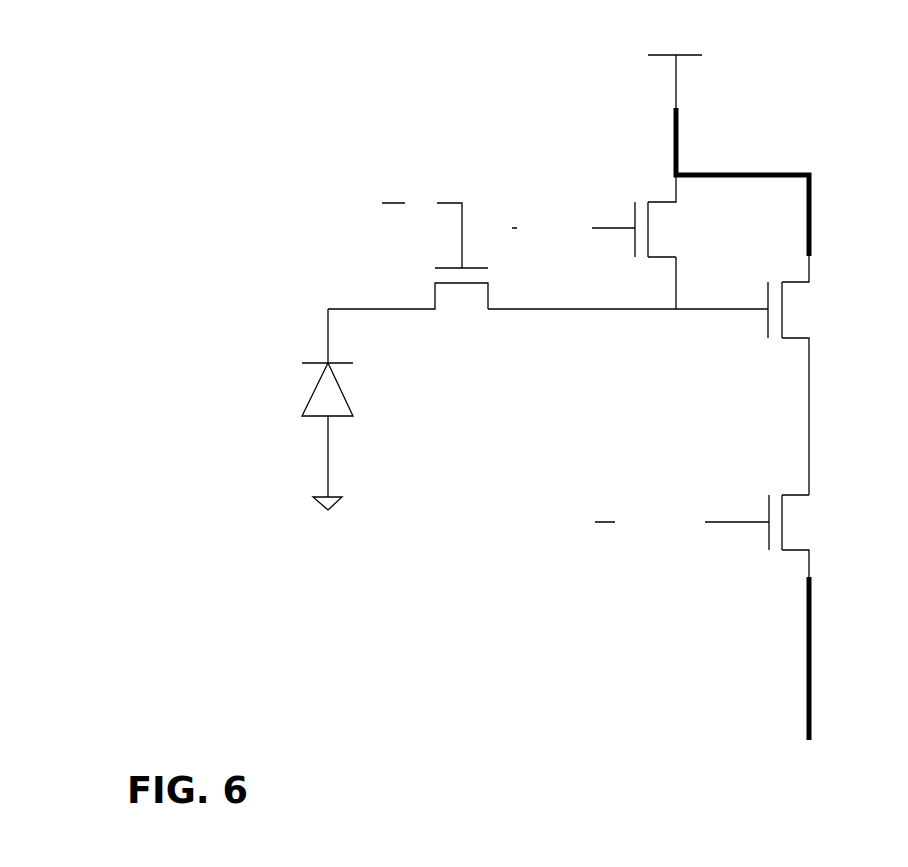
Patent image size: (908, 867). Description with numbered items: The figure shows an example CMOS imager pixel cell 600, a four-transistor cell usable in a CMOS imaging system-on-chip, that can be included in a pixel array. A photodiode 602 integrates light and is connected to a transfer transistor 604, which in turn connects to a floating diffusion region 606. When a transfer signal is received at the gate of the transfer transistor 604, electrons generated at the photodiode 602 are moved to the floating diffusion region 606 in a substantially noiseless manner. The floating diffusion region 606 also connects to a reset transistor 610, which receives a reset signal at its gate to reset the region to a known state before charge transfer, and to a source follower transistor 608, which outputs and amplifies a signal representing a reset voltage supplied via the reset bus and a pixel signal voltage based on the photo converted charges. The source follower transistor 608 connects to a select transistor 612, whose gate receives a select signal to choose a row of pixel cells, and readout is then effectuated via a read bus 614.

The CMOS imager pixel cell 600 is at (134, 93).
The photodiode 602 is at (283, 362).
The transfer transistor 604 is at (418, 270).
The floating diffusion region 606 is at (690, 323).
The source follower transistor 608 is at (778, 345).
The reset transistor 610 is at (634, 195).
The select transistor 612 is at (770, 493).
The read bus 614 is at (826, 655).